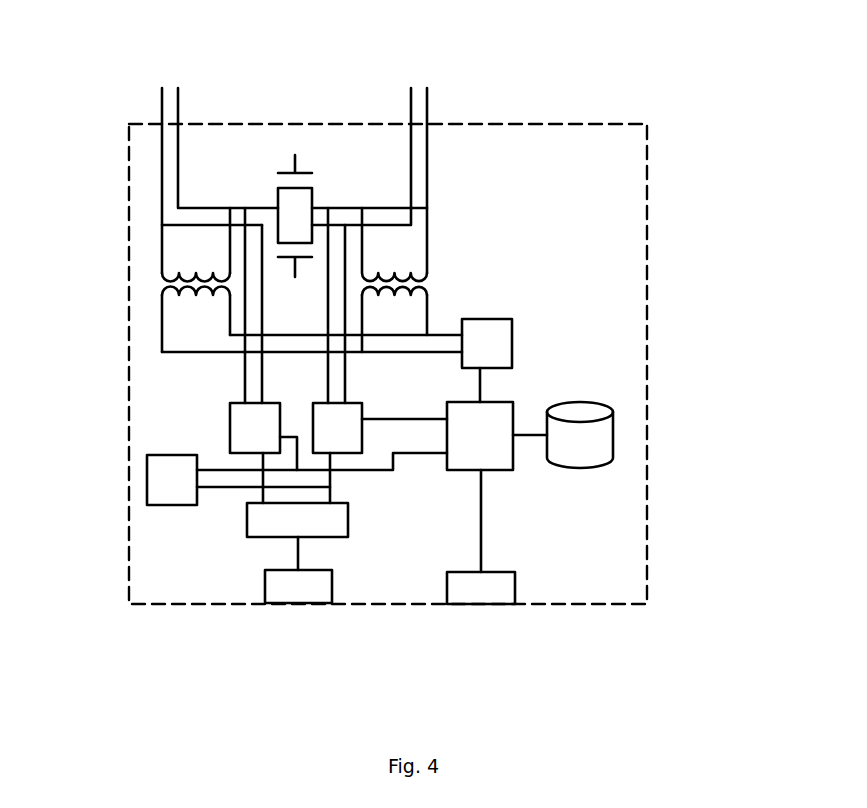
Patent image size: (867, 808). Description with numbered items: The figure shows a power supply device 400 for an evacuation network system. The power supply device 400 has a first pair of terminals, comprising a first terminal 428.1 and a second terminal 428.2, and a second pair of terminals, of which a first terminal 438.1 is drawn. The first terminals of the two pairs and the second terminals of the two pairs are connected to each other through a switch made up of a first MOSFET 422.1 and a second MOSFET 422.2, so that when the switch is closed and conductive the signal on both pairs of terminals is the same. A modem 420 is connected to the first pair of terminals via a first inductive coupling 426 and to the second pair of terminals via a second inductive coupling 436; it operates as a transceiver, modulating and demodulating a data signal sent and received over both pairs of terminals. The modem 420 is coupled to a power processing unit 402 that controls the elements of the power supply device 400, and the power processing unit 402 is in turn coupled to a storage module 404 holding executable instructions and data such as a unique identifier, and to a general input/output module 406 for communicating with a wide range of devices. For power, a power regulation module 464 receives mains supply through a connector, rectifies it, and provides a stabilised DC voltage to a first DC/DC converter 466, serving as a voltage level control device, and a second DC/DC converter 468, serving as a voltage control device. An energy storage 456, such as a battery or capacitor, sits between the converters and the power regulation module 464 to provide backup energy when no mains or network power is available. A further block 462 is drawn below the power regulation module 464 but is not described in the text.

The power supply device 400 is at (185, 604).
The power processing unit 402 is at (497, 470).
The storage module 404 is at (612, 432).
The general input/output module 406 is at (480, 585).
The modem 420 is at (513, 352).
The first MOSFET 422.1 is at (278, 188).
The second MOSFET 422.2 is at (295, 243).
The first inductive coupling 426 is at (162, 288).
The first terminal of the first pair of terminals 428.1 is at (160, 100).
The second terminal of the first pair of terminals 428.2 is at (177, 100).
The second inductive coupling 436 is at (428, 270).
The first terminal of the second pair of terminals 438.1 is at (403, 100).
The energy storage 456 is at (147, 470).
The output unit 462 is at (282, 587).
The power regulation module 464 is at (328, 537).
The first DC/DC converter 466 is at (230, 422).
The second DC/DC converter 468 is at (357, 453).